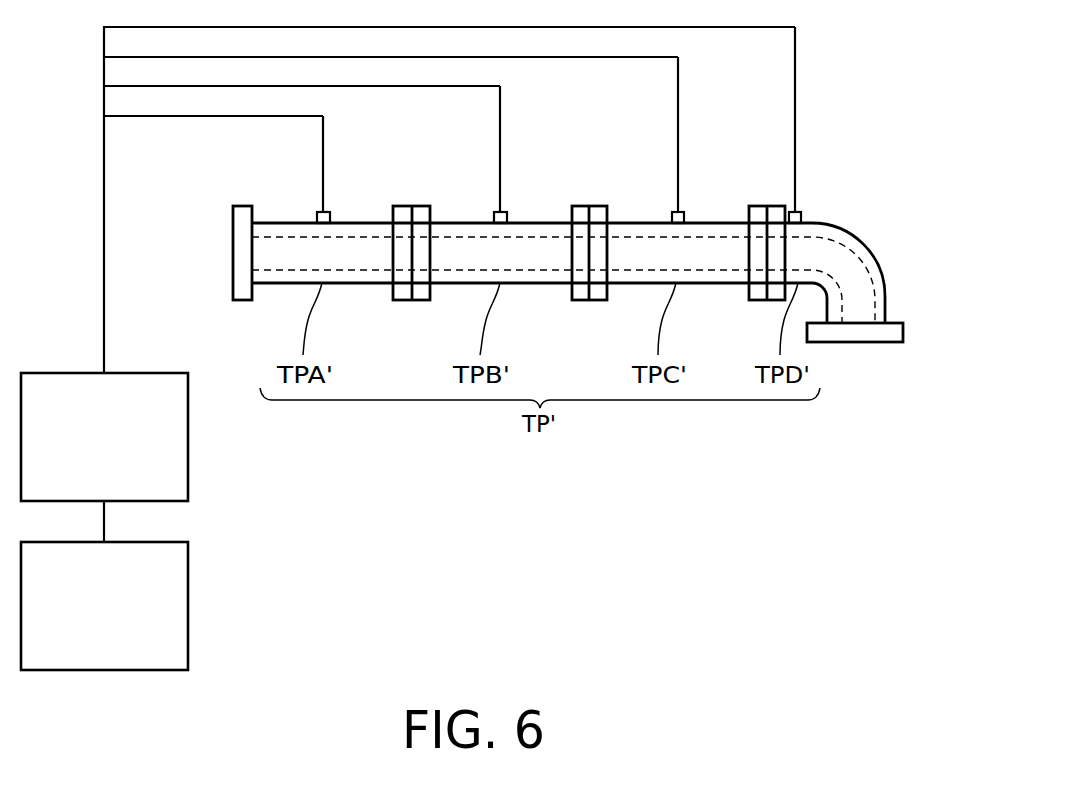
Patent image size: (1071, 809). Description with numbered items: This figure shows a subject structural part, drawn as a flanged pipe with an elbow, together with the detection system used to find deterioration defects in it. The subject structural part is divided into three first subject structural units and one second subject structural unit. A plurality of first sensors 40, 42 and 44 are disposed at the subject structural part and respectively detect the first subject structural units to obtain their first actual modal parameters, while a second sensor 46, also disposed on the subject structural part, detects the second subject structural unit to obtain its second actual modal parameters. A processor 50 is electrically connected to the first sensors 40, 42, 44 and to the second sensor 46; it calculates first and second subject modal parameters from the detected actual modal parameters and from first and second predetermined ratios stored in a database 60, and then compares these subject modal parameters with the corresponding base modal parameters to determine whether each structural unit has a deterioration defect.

The first sensor 40 is at (317, 220).
The first sensor 42 is at (494, 220).
The first sensor 44 is at (672, 220).
The second sensor 46 is at (801, 220).
The processor 50 is at (91, 466).
The database 60 is at (91, 634).